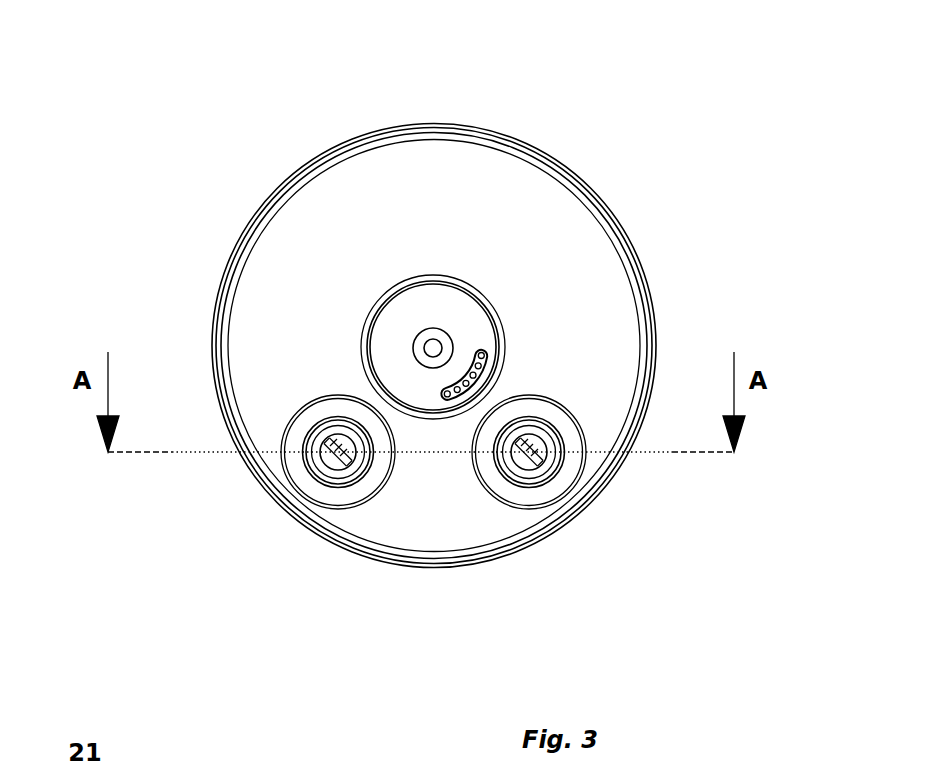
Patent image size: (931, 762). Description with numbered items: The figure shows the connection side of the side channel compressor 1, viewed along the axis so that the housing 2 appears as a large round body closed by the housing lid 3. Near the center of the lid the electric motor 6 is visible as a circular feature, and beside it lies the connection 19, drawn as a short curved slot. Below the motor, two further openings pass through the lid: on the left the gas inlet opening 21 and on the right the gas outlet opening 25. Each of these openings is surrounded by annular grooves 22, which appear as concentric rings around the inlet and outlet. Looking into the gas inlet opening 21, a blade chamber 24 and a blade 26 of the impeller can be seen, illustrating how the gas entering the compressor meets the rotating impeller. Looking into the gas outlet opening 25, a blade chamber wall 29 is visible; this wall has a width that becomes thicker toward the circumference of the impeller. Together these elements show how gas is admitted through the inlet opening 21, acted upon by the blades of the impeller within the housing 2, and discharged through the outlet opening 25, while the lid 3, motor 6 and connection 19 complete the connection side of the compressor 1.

The side channel compressor 1 is at (477, 113).
The housing 2 is at (310, 248).
The housing lid 3 is at (385, 128).
The electric motor 6 is at (429, 298).
The connection 19 is at (484, 356).
The gas inlet opening 21 is at (318, 463).
The annular grooves 22 is at (433, 527).
The blade chamber 24 is at (340, 440).
The gas outlet opening 25 is at (530, 475).
The blade 26 is at (332, 455).
The blade chamber wall 29 is at (547, 445).